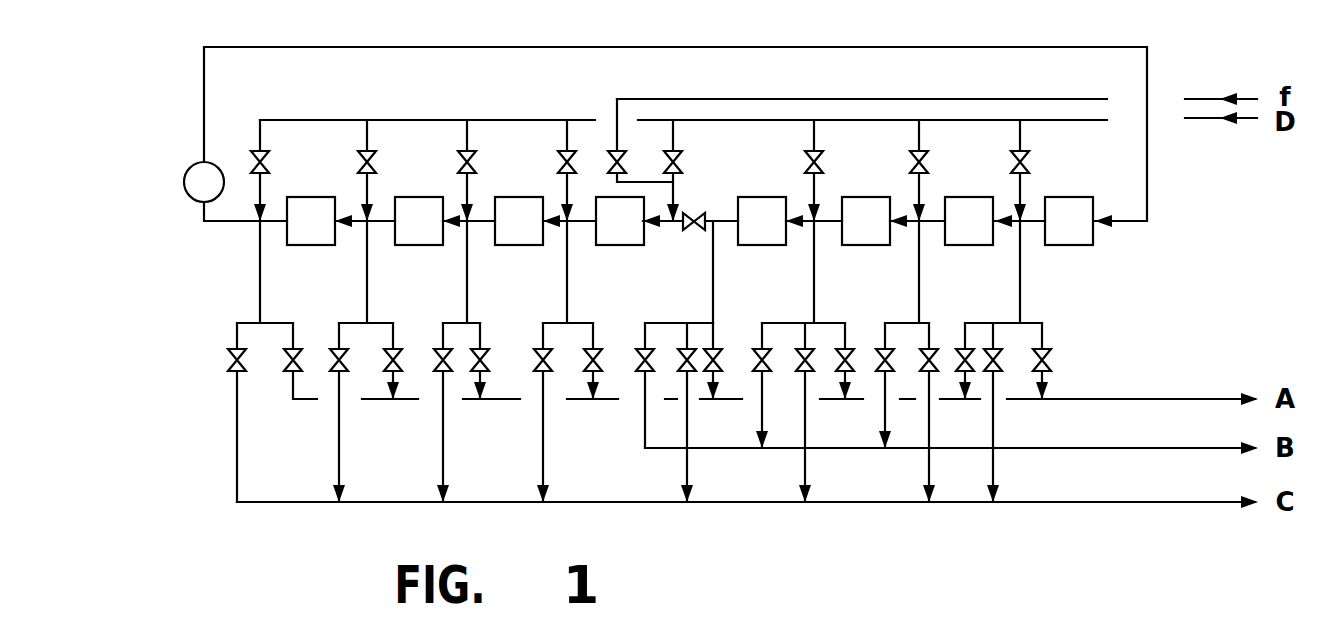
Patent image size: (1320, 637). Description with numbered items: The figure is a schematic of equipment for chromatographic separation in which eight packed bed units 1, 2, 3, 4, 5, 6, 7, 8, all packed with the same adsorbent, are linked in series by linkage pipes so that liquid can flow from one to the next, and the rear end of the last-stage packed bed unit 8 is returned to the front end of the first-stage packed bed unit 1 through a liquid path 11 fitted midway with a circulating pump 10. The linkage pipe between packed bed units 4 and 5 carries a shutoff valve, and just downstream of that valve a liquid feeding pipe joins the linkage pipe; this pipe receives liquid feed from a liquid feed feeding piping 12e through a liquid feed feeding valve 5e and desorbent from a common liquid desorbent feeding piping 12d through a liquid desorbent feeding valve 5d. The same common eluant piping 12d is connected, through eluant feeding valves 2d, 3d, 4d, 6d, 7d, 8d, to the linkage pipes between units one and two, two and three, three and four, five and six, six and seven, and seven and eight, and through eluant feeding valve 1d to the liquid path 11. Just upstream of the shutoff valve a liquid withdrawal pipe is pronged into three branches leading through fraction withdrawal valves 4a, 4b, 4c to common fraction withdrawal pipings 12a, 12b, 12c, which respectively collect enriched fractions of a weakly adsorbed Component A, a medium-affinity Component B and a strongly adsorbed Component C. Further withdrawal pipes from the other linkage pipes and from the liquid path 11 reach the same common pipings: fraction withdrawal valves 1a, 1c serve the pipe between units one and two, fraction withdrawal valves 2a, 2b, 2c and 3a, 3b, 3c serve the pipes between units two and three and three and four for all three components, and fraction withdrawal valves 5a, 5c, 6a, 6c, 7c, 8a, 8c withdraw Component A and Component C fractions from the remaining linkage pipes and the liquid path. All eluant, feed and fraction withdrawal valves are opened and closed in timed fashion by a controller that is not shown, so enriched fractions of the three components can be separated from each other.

The packed bed unit 1 is at (1067, 232).
The packed bed unit 2 is at (962, 233).
The packed bed unit 3 is at (880, 233).
The packed bed unit 4 is at (752, 235).
The packed bed unit 5 is at (607, 228).
The packed bed unit 6 is at (508, 230).
The packed bed unit 7 is at (411, 230).
The packed bed unit 8 is at (306, 232).
The circulating pump 10 is at (187, 188).
The liquid path 11 is at (852, 47).
The common fraction withdrawal piping 12a is at (1070, 397).
The common fraction withdrawal piping 12b is at (1095, 447).
The common fraction withdrawal piping 12c is at (1083, 500).
The common liquid desorbent feeding piping 12d is at (897, 120).
The liquid feed feeding piping 12e is at (776, 98).
The eluant feeding valve 1d is at (263, 157).
The eluant feeding valve 2d is at (1027, 160).
The eluant feeding valve 3d is at (926, 157).
The eluant feeding valve 4d is at (822, 160).
The liquid desorbent feeding valve 5d is at (680, 157).
The liquid feed feeding valve 5e is at (614, 157).
The eluant feeding valve 6d is at (566, 160).
The eluant feeding valve 7d is at (470, 153).
The eluant feeding valve 8d is at (370, 163).
The fraction withdrawal valve 1a is at (1046, 372).
The fraction withdrawal valve 1c is at (995, 372).
The fraction withdrawal valve 2a is at (972, 372).
The fraction withdrawal valve 2b is at (888, 372).
The fraction withdrawal valve 2c is at (931, 372).
The fraction withdrawal valve 3a is at (850, 355).
The fraction withdrawal valve 3b is at (766, 372).
The fraction withdrawal valve 3c is at (808, 372).
The fraction withdrawal valve 4a is at (721, 368).
The fraction withdrawal valve 4b is at (638, 365).
The fraction withdrawal valve 4c is at (681, 368).
The fraction withdrawal valve 5a is at (596, 362).
The fraction withdrawal valve 5c is at (547, 362).
The fraction withdrawal valve 6a is at (484, 362).
The fraction withdrawal valve 6c is at (446, 362).
The fraction withdrawal valve 7c is at (343, 362).
The fraction withdrawal valve 8a is at (297, 366).
The fraction withdrawal valve 8c is at (241, 366).